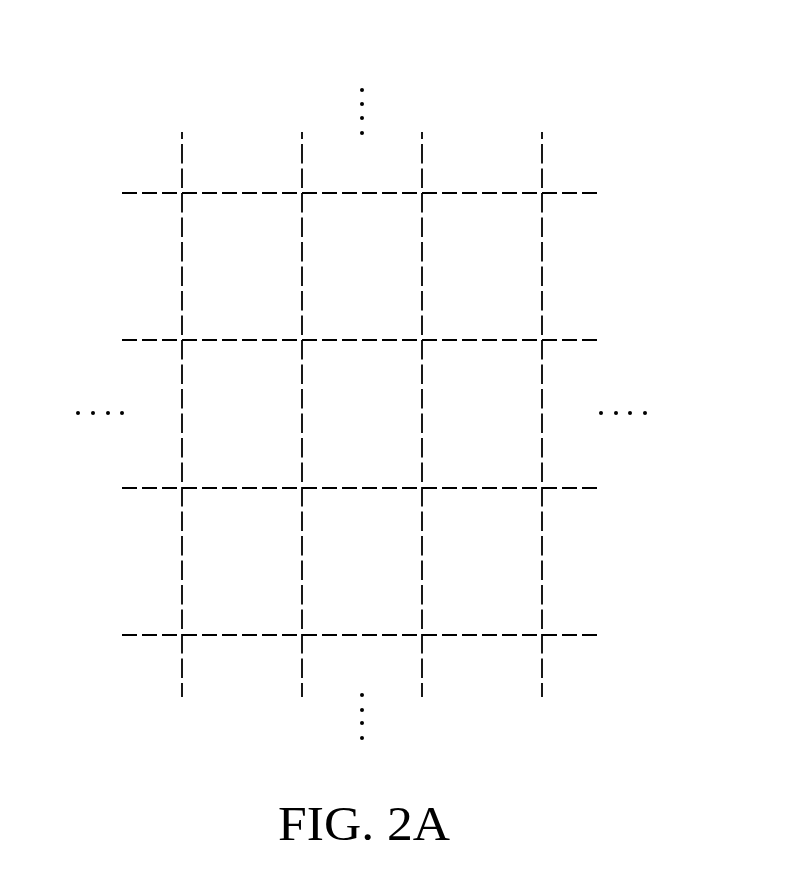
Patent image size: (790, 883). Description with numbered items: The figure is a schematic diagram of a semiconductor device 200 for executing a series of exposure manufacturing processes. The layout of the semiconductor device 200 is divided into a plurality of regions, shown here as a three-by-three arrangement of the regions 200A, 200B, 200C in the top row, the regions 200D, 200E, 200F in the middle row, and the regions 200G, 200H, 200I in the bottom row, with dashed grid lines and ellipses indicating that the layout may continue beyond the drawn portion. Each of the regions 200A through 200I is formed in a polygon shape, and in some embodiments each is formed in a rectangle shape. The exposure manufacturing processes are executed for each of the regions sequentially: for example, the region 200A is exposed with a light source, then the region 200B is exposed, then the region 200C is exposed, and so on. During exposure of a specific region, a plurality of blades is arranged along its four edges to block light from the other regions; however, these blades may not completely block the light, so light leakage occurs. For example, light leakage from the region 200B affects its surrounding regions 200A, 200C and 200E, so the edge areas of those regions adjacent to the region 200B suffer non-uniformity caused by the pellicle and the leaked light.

The semiconductor device 200 is at (93, 91).
The region 200A is at (204, 283).
The region 200B is at (326, 283).
The region 200C is at (446, 283).
The region 200D is at (204, 430).
The region 200E is at (327, 430).
The region 200F is at (448, 430).
The region 200G is at (204, 578).
The region 200H is at (324, 578).
The region 200I is at (452, 578).